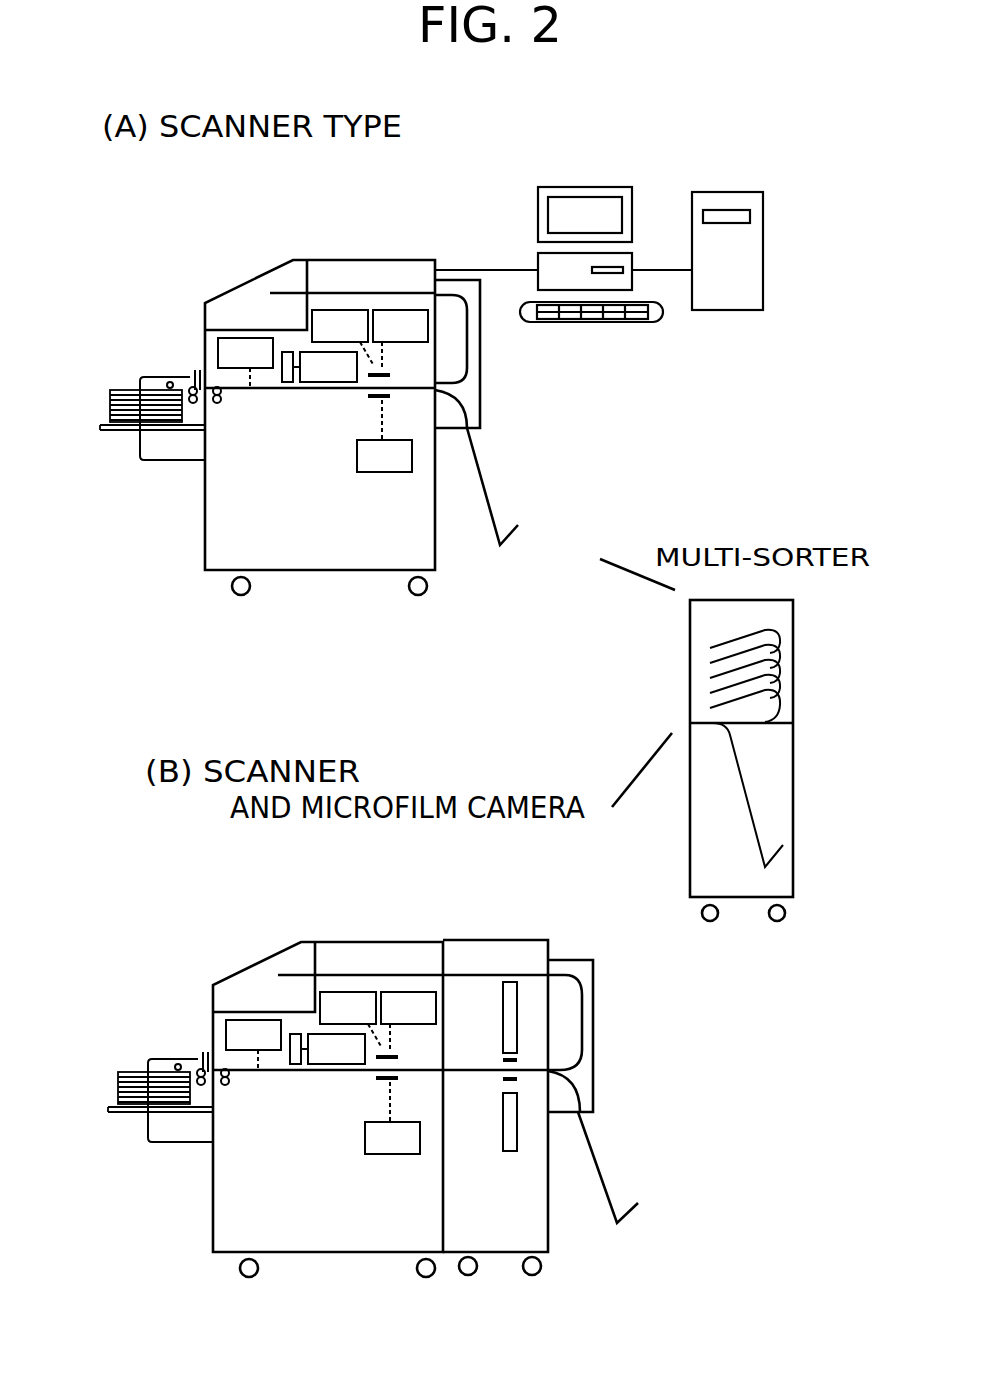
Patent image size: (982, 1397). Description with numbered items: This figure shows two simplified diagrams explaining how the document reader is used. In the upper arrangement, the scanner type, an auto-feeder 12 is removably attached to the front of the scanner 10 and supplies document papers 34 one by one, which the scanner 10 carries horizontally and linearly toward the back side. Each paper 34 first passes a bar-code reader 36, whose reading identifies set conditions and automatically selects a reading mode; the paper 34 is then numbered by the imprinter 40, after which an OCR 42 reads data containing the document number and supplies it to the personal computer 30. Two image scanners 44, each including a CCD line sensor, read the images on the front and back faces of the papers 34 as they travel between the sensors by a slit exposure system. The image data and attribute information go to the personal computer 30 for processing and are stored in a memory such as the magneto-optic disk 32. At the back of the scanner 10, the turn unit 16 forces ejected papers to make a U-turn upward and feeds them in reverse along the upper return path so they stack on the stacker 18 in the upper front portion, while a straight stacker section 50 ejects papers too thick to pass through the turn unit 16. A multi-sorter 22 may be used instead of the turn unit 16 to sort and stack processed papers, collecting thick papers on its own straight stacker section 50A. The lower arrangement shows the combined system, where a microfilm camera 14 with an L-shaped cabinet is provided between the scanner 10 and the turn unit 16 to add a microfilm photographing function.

The scanner 10 is at (368, 572).
The auto-feeder 12 is at (100, 412).
The microfilm camera 14 is at (500, 938).
The turn unit 16 is at (473, 400).
The stacker 18 is at (233, 310).
The multi-sorter 22 is at (755, 900).
The personal computer 30 is at (527, 206).
The magneto-optic disk 32 is at (764, 228).
The document papers 34 is at (127, 383).
The bar-code reader 36 is at (220, 347).
The imprinter 40 is at (318, 384).
The OCR 42 is at (350, 310).
The image scanner 44 is at (415, 342).
The straight stacker section 50 is at (507, 537).
The straight stacker section 50A is at (745, 802).